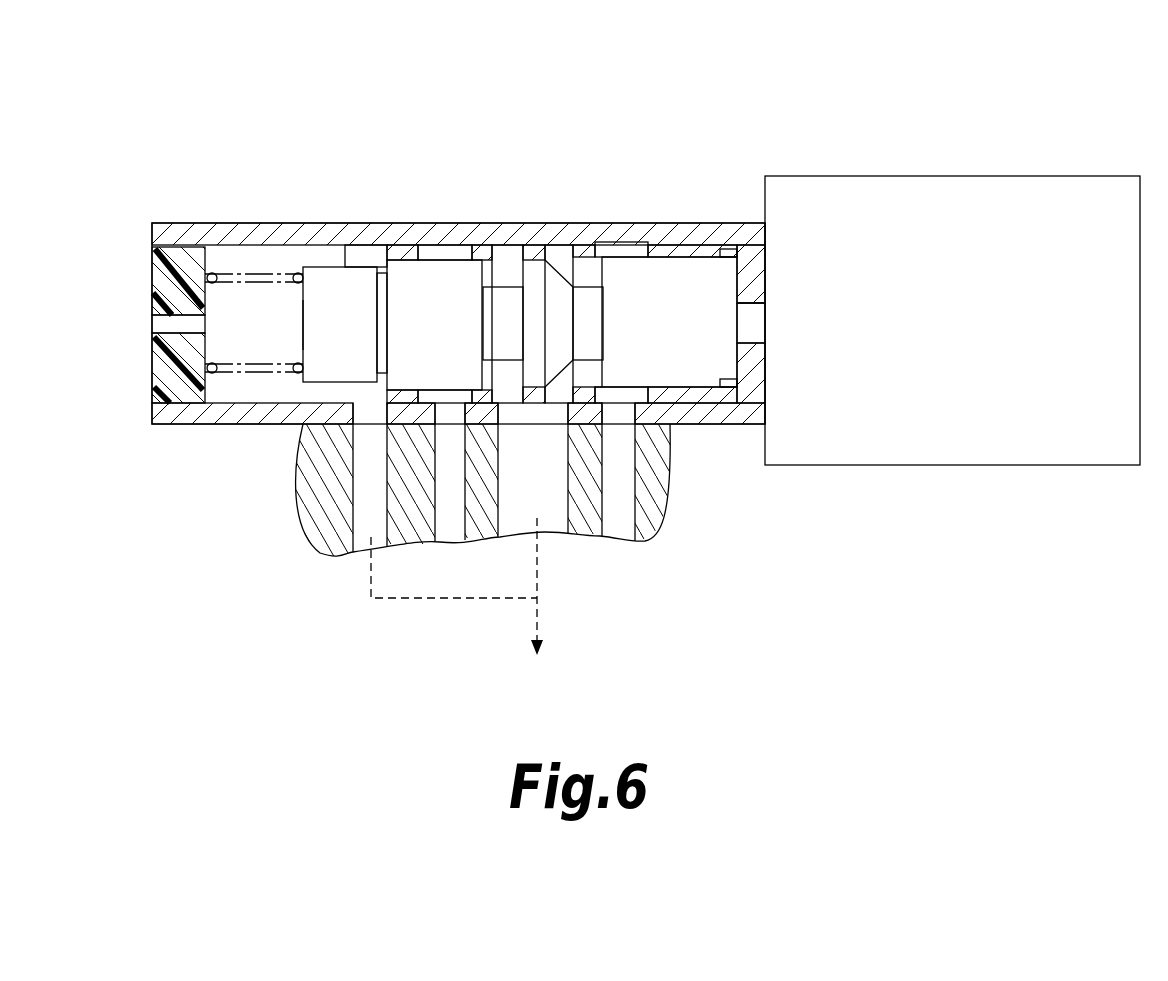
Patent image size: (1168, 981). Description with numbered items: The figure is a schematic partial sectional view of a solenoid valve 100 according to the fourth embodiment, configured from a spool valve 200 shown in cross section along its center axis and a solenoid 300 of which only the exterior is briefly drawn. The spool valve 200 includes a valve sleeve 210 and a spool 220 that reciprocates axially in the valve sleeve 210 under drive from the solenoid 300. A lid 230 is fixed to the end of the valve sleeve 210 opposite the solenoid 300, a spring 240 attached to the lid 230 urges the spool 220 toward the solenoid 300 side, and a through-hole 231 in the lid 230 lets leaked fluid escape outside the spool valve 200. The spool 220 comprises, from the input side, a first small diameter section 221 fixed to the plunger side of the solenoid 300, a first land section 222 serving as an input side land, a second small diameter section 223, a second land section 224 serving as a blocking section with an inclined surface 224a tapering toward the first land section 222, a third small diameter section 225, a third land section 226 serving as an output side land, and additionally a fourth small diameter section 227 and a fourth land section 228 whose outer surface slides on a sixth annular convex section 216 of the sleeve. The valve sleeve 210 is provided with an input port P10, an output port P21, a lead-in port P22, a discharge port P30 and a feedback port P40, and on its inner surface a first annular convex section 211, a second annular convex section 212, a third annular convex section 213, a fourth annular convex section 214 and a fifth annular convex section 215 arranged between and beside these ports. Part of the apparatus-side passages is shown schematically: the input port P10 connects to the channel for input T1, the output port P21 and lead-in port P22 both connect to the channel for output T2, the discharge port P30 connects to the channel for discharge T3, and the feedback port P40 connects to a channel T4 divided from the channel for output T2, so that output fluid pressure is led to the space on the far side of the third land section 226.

The solenoid valve 100 is at (609, 369).
The spool valve 200 is at (477, 397).
The valve sleeve 210 is at (461, 336).
The spool 220 is at (752, 368).
The solenoid 300 is at (955, 188).
The first small diameter section 221 is at (750, 313).
The first land section 222 is at (668, 277).
The second small diameter section 223 is at (587, 300).
The second land section 224 is at (453, 265).
The inclined surface 224a is at (568, 268).
The third small diameter section 225 is at (505, 300).
The third land section 226 is at (428, 297).
The fourth small diameter section 227 is at (398, 265).
The fourth land section 228 is at (320, 268).
The lid 230 is at (160, 278).
The through-hole 231 is at (178, 317).
The spring 240 is at (245, 278).
The sixth annular convex section 216 is at (305, 353).
The first annular convex section 211 is at (747, 380).
The second annular convex section 212 is at (600, 380).
The third annular convex section 213 is at (473, 537).
The fourth annular convex section 214 is at (495, 508).
The fifth annular convex section 215 is at (412, 512).
The feedback port P40 is at (362, 410).
The discharge port P30 is at (462, 410).
The lead-in port P22 is at (500, 400).
The output port P21 is at (548, 405).
The input port P10 is at (612, 440).
The channel for input T1 is at (625, 500).
The channel for output T2 is at (558, 440).
The channel for discharge T3 is at (452, 520).
The channel divided from the channel for output T4 is at (340, 520).